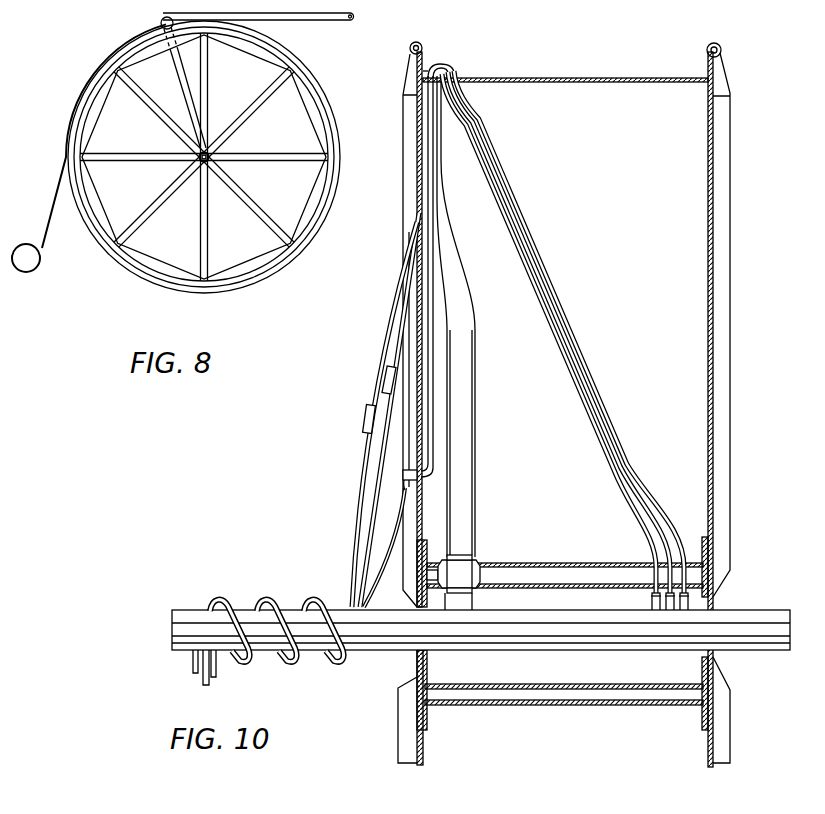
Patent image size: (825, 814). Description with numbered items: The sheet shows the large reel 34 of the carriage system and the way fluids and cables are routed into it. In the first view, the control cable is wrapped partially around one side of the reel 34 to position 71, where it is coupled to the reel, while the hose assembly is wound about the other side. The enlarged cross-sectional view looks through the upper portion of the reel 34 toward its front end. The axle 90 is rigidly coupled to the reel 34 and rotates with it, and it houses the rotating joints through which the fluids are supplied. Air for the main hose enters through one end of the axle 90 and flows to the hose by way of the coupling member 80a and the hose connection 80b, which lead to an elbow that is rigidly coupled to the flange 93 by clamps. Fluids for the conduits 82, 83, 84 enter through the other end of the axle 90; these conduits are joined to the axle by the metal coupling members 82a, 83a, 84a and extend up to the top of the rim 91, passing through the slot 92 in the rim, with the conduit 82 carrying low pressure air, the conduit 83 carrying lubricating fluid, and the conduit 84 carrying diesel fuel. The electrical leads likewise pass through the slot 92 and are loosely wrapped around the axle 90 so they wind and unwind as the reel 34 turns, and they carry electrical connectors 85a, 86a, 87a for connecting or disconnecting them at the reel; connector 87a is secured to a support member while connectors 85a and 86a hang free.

In FIG. 8, the position 71 is at (211, 291).
In FIG. 10, the reel 34 is at (720, 320).
In FIG. 10, the axle 90 is at (195, 609).
In FIG. 10, the rim 91 is at (630, 78).
In FIG. 10, the slot 92 is at (461, 77).
In FIG. 10, the flange 93 is at (413, 45).
In FIG. 10, the coupling member 80a is at (480, 562).
In FIG. 10, the hose connection 80b is at (476, 483).
In FIG. 10, the conduit 82 is at (632, 503).
In FIG. 10, the conduit 83 is at (655, 520).
In FIG. 10, the conduit 84 is at (672, 535).
In FIG. 10, the coupling member 82a is at (653, 603).
In FIG. 10, the coupling member 83a is at (666, 597).
In FIG. 10, the coupling member 84a is at (689, 598).
In FIG. 10, the electrical connector 85a is at (385, 380).
In FIG. 10, the electrical connector 86a is at (366, 419).
In FIG. 10, the electrical connector 87a is at (403, 477).